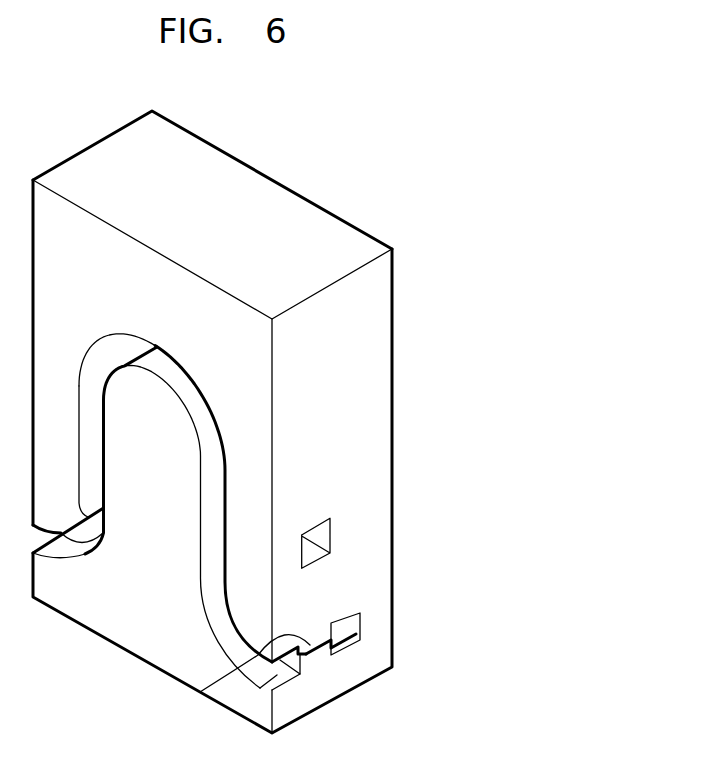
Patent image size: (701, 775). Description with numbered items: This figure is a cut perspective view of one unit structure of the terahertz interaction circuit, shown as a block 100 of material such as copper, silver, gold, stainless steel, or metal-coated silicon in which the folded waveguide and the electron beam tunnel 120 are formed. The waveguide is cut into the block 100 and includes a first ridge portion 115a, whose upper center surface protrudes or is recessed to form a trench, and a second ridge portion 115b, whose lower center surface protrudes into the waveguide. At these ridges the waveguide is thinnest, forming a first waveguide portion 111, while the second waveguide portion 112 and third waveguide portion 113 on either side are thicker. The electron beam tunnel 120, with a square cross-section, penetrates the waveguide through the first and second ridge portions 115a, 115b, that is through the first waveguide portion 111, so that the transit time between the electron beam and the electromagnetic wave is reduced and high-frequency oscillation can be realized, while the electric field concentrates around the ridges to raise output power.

The block 100 is at (390, 400).
The first waveguide portion 111 is at (320, 662).
The second waveguide portion 112 is at (277, 673).
The third waveguide portion 113 is at (368, 642).
The first ridge portion 115a is at (260, 681).
The second ridge portion 115b is at (313, 665).
The electron beam tunnel 120 is at (330, 540).